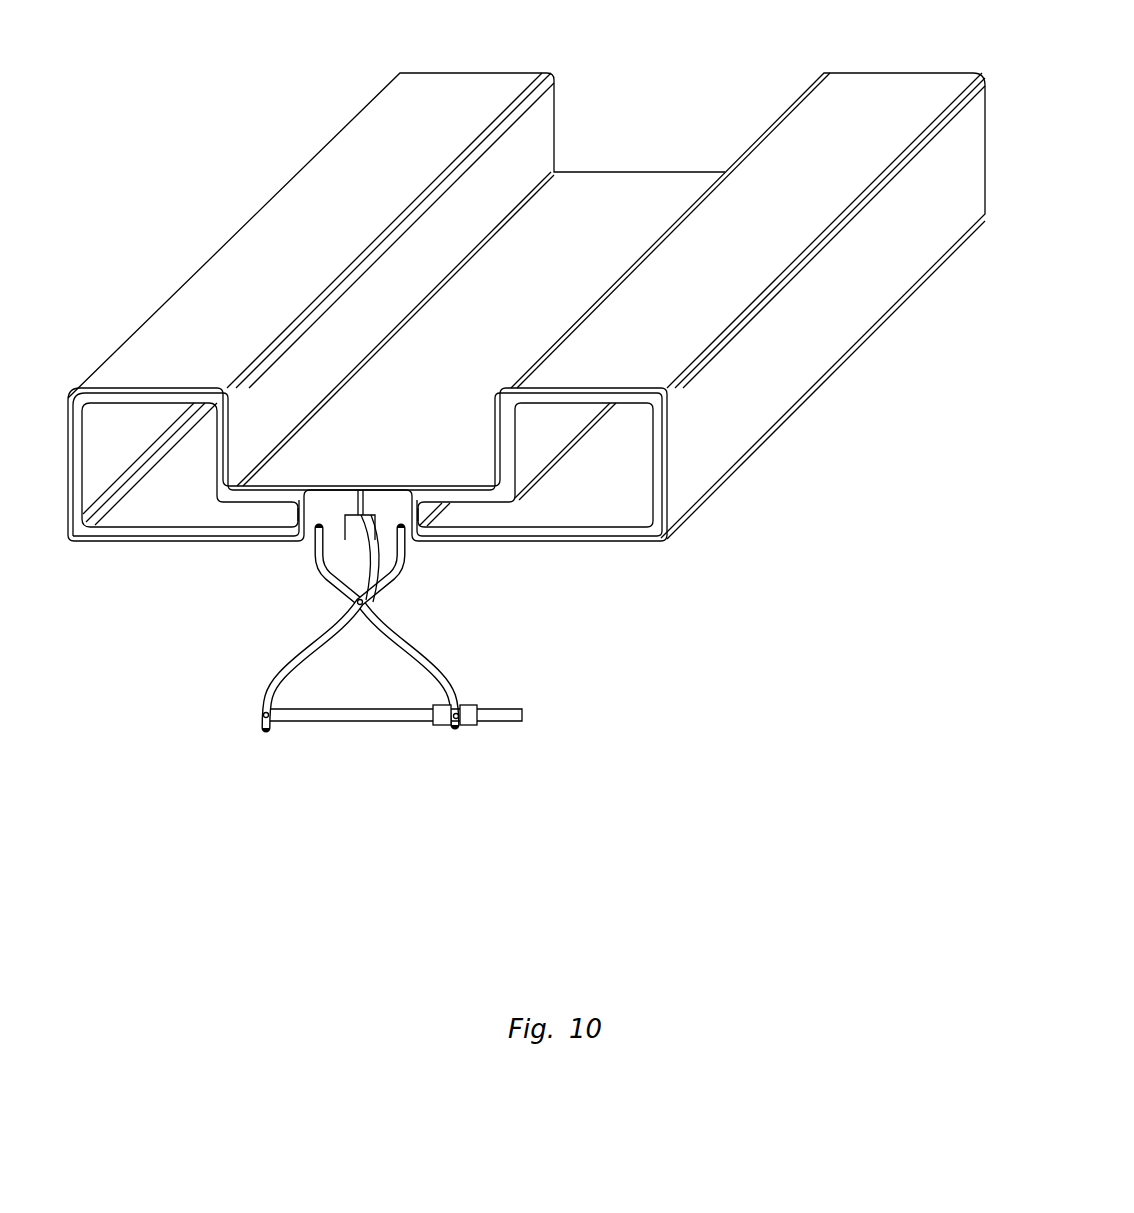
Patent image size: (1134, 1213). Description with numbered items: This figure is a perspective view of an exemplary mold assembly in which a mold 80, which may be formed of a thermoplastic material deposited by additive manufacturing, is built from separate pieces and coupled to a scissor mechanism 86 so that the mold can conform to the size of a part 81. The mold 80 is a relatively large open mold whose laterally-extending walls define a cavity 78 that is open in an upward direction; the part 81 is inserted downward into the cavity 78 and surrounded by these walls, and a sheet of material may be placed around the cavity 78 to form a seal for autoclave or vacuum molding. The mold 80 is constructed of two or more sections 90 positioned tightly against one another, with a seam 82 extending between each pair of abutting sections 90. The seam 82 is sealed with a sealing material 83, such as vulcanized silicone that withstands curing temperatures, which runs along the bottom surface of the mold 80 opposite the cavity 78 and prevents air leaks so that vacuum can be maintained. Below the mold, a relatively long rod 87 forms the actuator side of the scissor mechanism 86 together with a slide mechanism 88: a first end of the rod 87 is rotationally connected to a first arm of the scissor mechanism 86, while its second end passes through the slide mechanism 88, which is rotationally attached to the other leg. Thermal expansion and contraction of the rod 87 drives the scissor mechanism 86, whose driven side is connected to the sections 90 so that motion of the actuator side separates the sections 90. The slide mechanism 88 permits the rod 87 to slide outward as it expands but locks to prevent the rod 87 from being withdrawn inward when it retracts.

The cavity 78 is at (641, 110).
The mold 80 is at (178, 540).
The part 81 is at (386, 422).
The seam 82 is at (364, 502).
The sealing material 83 is at (363, 604).
The scissor mechanism 86 is at (431, 647).
The rod 87 is at (333, 717).
The slide mechanism 88 is at (467, 719).
The sections 90 is at (255, 495).